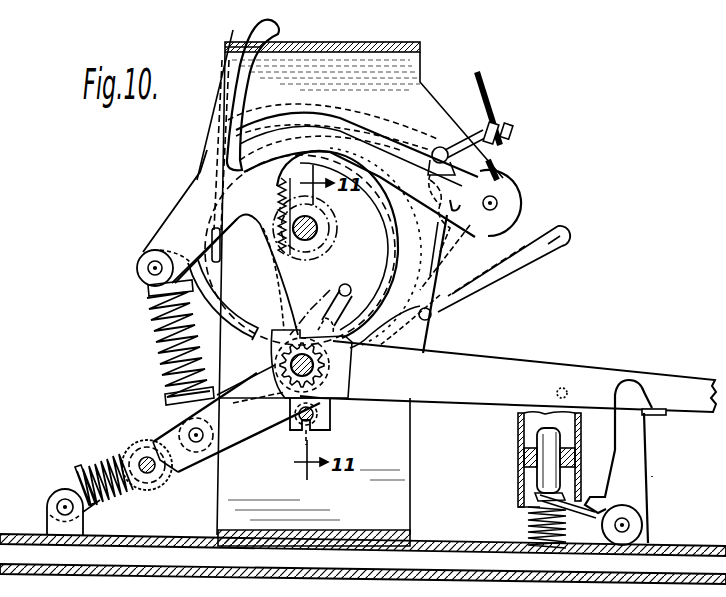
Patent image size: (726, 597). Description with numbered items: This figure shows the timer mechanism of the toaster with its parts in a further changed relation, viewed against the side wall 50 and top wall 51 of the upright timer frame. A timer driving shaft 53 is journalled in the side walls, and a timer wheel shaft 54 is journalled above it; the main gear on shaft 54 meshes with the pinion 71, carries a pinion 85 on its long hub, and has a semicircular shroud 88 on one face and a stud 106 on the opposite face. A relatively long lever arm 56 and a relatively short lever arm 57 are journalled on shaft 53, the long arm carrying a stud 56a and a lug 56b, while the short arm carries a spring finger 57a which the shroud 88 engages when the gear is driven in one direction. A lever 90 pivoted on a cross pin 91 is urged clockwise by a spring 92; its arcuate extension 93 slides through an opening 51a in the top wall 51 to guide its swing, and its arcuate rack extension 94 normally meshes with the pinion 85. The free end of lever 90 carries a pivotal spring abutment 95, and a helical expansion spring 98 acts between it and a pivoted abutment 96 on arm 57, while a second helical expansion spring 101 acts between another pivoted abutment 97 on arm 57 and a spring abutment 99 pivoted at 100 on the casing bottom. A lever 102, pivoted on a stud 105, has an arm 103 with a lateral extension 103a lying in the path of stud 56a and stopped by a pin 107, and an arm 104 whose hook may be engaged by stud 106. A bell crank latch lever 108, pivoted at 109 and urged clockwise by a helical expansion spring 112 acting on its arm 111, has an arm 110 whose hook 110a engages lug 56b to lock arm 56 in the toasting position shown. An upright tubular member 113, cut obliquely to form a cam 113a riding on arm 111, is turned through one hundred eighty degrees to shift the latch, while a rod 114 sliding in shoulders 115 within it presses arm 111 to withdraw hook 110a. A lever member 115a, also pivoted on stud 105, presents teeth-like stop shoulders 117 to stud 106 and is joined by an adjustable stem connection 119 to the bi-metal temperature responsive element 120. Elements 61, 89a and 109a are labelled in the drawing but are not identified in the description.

The side wall 50 is at (402, 437).
The top wall 51 is at (340, 44).
The opening 51a is at (280, 40).
The timer driving shaft 53 is at (330, 370).
The timer wheel shaft 54 is at (318, 233).
The lever arm 56 is at (470, 361).
The stud 56a is at (567, 392).
The lug 56b is at (658, 408).
The lever arm 57 is at (244, 422).
The spring finger 57a is at (314, 290).
The crank disc 61 is at (160, 482).
The pinion 71 is at (282, 386).
The pinion 85 is at (326, 217).
The shroud 88 is at (396, 233).
The lever alternate position 89a is at (207, 189).
The lever 90 is at (355, 146).
The cross pin 91 is at (499, 203).
The spring 92 is at (504, 172).
The arcuate extension 93 is at (245, 81).
The arcuate rack extension 94 is at (300, 255).
The pivotal spring abutment 95 is at (137, 290).
The pivoted abutment 96 is at (170, 400).
The pivoted abutment 97 is at (183, 430).
The helical expansion spring 98 is at (168, 340).
The spring abutment 99 is at (72, 484).
The pivot 100 is at (58, 500).
The helical expansion spring 101 is at (118, 498).
The lever 102 is at (559, 229).
The lever arm 103 is at (500, 259).
The lateral extension 103a is at (560, 240).
The lever arm 104 is at (376, 337).
The pivot stud 105 is at (432, 314).
The stud 106 is at (345, 350).
The pin 107 is at (430, 335).
The latch lever 108 is at (661, 480).
The pivot 109 is at (631, 525).
The arcuate arm 109a is at (268, 340).
The arm 110 is at (632, 445).
The hook 110a is at (640, 395).
The arm 111 is at (533, 494).
The helical expansion spring 112 is at (536, 515).
The tubular member 113 is at (518, 441).
The cam 113a is at (528, 508).
The rod 114 is at (545, 432).
The shoulders 115 is at (573, 456).
The lever member 115a is at (439, 233).
The stop shoulders 117 is at (440, 186).
The adjustable stem connection 119 is at (512, 133).
The temperature responsive element 120 is at (489, 98).